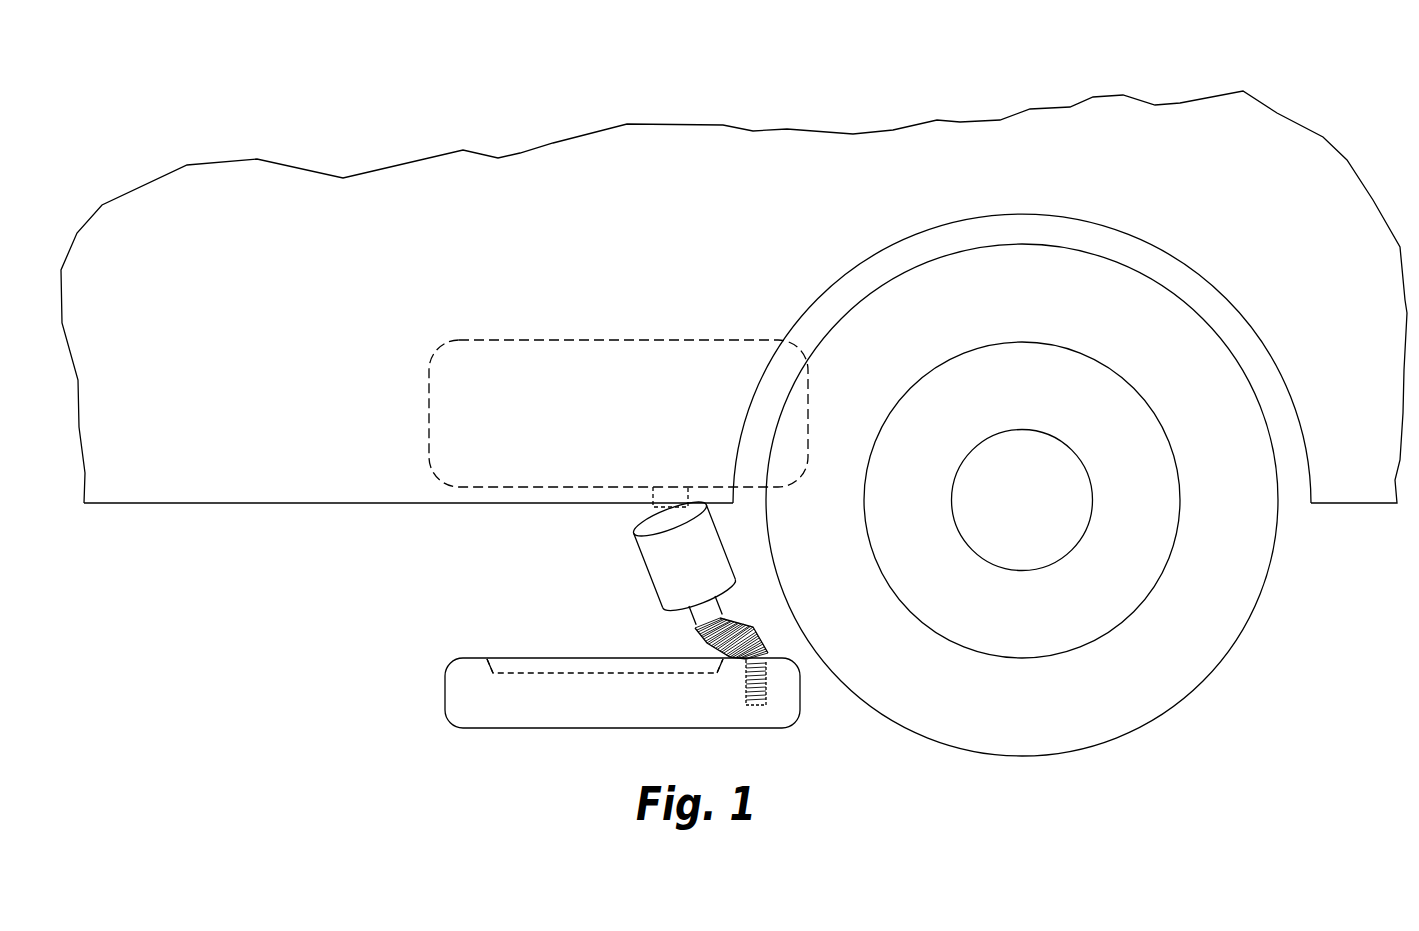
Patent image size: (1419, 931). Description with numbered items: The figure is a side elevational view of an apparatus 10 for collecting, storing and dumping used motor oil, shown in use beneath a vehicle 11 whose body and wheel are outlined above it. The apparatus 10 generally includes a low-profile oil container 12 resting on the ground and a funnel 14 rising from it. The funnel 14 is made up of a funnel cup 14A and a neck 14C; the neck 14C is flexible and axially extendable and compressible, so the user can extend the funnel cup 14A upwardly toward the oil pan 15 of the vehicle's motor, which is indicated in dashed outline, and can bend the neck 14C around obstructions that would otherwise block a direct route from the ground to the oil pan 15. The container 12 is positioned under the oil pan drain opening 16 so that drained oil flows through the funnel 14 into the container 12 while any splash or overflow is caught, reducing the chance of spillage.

The apparatus 10 is at (523, 646).
The vehicle body 11 is at (553, 143).
The oil container 12 is at (450, 660).
The funnel 14 is at (676, 630).
The funnel cup 14A is at (641, 558).
The neck 14C is at (760, 617).
The oil pan 15 is at (429, 472).
The oil pan drain opening 16 is at (652, 508).